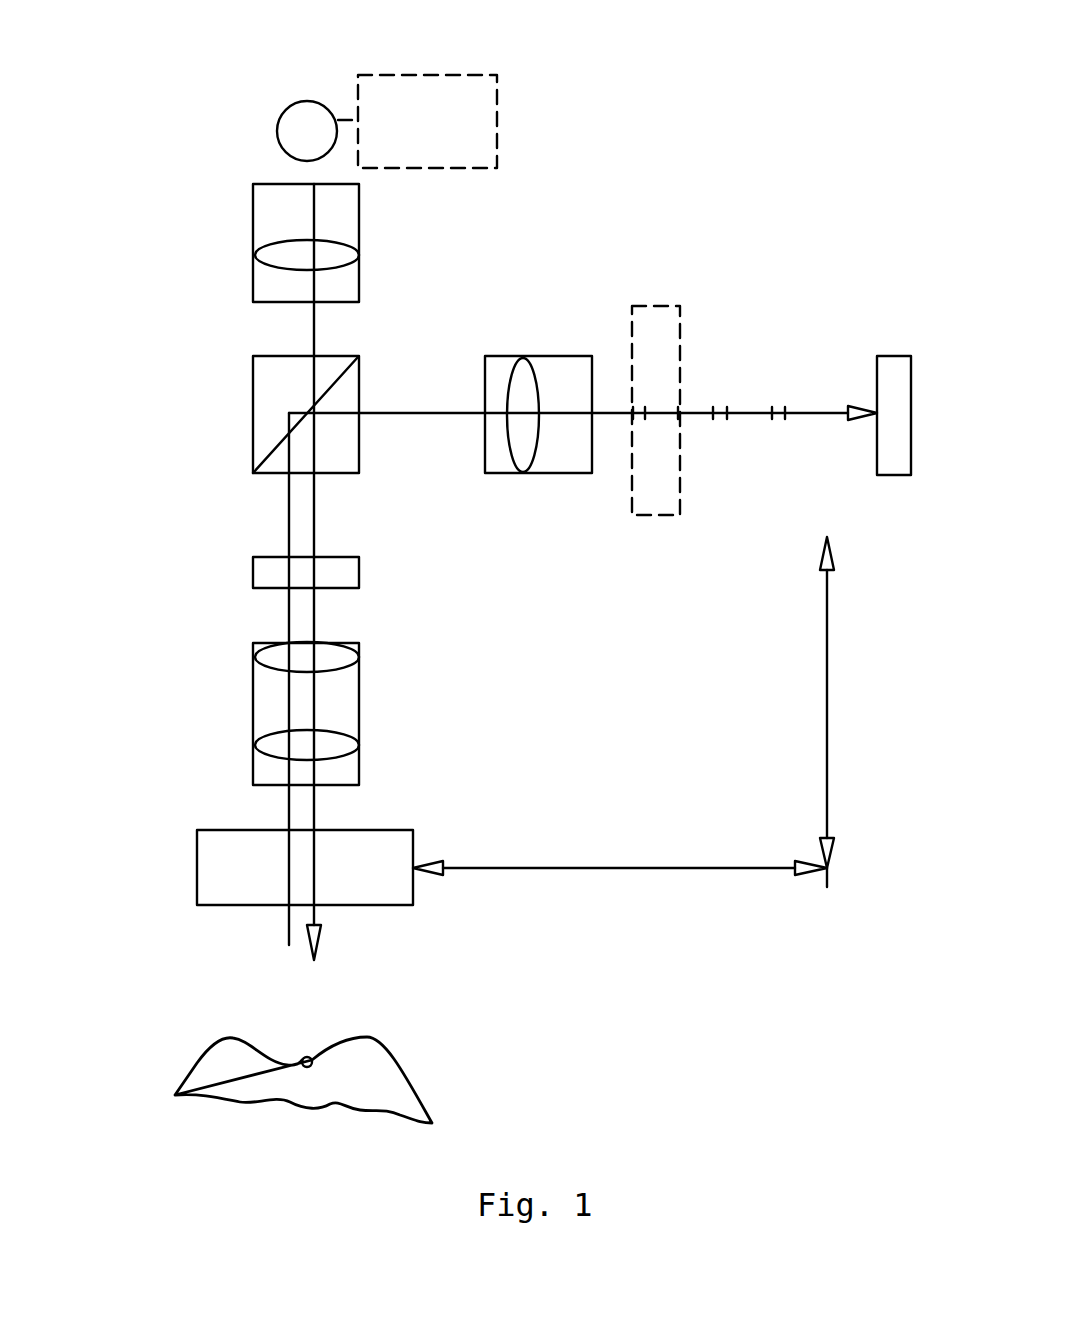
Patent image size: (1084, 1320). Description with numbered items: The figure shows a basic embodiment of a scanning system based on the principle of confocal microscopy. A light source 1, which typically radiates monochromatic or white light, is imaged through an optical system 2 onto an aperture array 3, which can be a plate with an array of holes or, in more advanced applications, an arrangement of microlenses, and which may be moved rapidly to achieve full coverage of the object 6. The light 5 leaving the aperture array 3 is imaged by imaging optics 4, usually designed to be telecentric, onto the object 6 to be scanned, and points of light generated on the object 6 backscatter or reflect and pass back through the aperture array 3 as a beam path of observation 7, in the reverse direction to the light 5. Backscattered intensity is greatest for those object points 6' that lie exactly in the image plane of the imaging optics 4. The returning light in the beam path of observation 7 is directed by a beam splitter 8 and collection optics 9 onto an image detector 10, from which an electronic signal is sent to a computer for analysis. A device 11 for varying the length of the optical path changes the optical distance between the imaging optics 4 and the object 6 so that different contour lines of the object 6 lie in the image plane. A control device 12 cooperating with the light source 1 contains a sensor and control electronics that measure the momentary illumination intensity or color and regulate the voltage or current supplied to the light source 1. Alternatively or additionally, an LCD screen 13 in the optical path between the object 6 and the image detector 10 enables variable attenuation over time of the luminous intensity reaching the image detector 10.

The light source 1 is at (293, 132).
The optical system 2 is at (270, 225).
The aperture array 3 is at (270, 573).
The imaging optics 4 is at (268, 683).
The light 5 is at (314, 330).
The object 6 is at (251, 1058).
The object points 6' is at (381, 1011).
The beam path of observation 7 is at (285, 933).
The beam splitter 8 is at (270, 397).
The collection optics 9 is at (570, 373).
The image detector 10 is at (895, 373).
The device for varying the length of the optical path 11 is at (217, 842).
The control device 12 is at (472, 122).
The LCD screen 13 is at (655, 330).